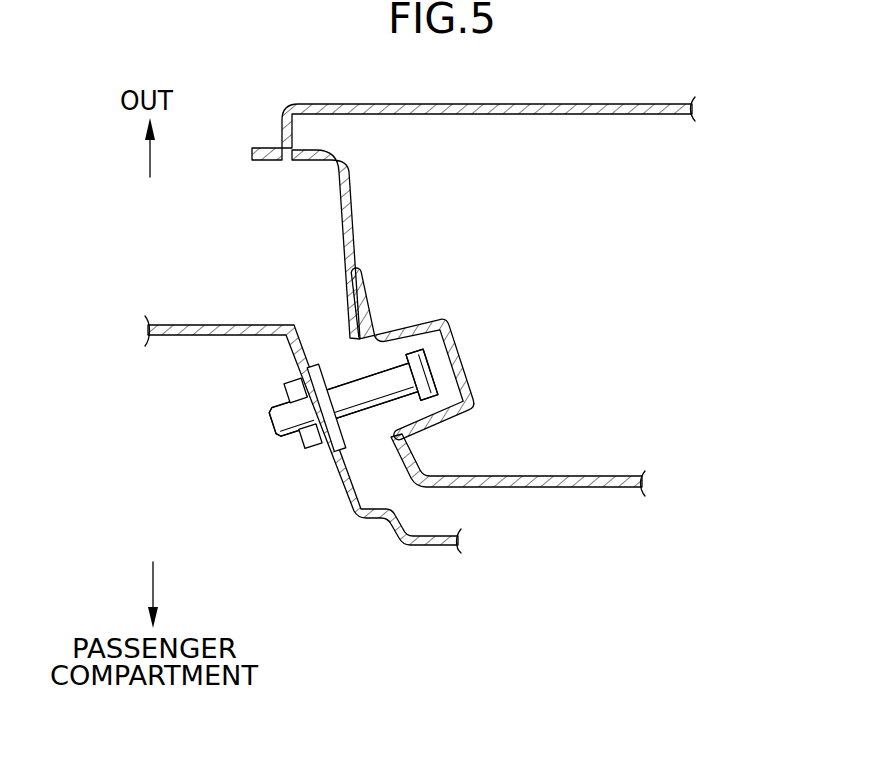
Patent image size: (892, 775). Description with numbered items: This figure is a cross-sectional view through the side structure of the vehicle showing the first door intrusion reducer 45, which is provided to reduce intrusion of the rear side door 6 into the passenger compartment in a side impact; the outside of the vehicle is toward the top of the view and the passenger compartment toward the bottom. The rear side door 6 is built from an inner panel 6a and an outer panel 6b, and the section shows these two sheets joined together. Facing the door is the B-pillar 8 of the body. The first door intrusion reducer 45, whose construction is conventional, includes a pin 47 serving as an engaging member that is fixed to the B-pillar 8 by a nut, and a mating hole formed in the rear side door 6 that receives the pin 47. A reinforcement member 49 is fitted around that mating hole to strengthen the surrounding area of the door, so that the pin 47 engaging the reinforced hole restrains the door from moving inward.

The rear side door 6 is at (511, 296).
The inner panel 6a is at (614, 476).
The outer panel 6b is at (597, 115).
The B-pillar 8 is at (207, 327).
The first door intrusion reducer 45 is at (362, 505).
The pin 47 is at (322, 452).
The reinforcement member 49 is at (364, 298).